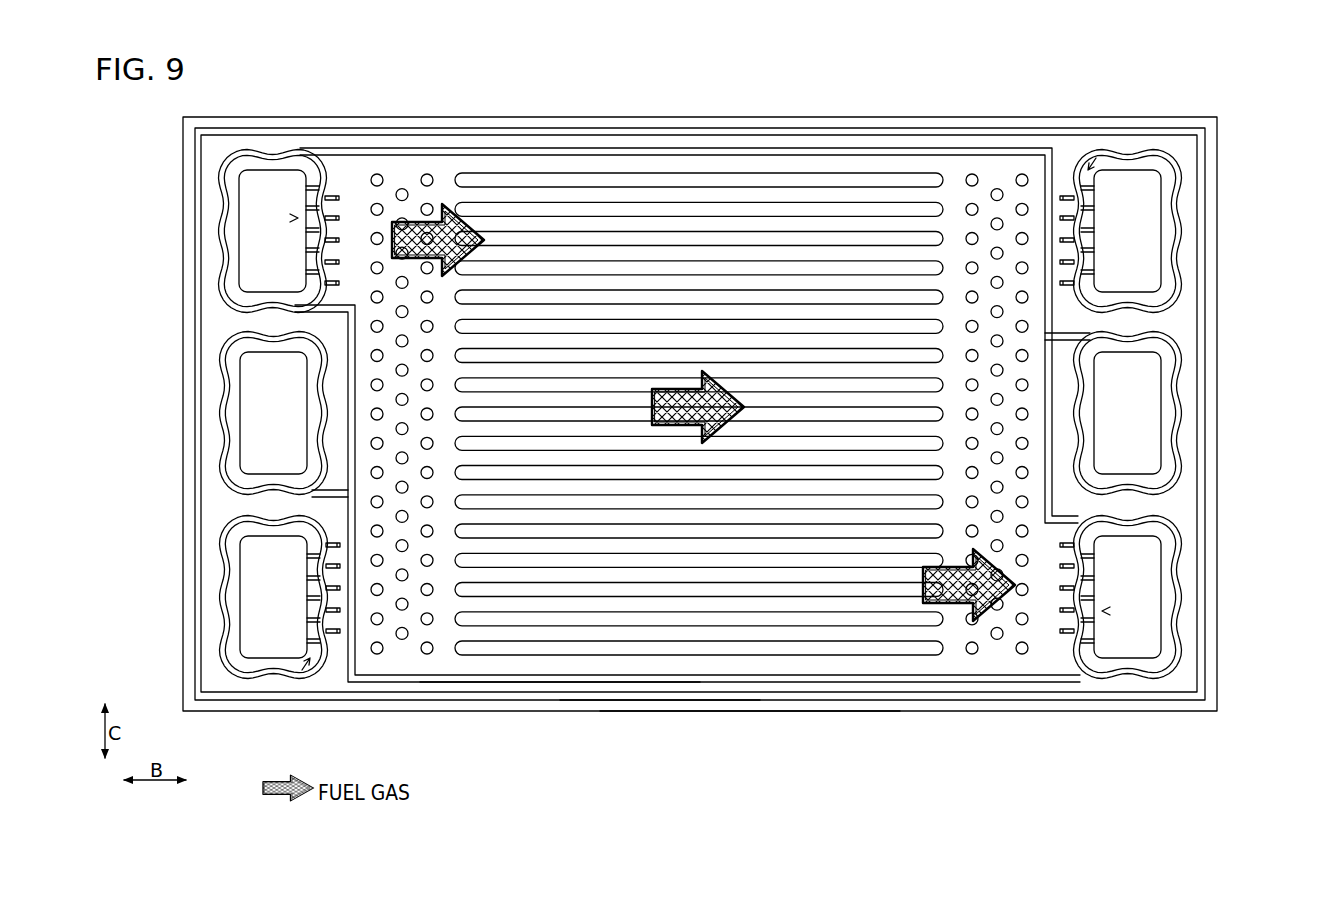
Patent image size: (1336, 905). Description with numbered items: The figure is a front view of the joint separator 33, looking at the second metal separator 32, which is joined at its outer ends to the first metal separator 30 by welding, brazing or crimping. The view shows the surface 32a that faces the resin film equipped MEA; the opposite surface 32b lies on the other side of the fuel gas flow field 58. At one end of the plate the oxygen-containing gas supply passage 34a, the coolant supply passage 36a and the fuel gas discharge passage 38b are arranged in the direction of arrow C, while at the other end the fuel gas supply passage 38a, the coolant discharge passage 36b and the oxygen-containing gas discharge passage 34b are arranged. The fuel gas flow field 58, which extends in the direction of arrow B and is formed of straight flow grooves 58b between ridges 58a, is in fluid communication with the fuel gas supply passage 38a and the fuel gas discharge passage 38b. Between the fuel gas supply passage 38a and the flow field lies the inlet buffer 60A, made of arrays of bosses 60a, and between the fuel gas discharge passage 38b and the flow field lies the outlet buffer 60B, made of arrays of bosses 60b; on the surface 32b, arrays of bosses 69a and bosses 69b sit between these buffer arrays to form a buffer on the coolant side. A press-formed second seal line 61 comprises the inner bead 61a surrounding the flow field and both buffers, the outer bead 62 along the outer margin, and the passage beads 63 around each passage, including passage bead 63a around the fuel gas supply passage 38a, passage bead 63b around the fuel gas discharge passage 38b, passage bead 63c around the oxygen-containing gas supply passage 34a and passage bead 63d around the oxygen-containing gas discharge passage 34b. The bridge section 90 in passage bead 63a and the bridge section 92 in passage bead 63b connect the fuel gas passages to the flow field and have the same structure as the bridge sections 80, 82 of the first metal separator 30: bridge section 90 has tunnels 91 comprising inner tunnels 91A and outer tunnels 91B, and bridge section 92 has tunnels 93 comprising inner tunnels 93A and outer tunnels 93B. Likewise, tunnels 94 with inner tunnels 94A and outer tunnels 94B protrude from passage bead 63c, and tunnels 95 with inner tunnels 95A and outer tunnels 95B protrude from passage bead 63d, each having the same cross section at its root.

The first metal separator 30 is at (812, 118).
The second metal separator 32 is at (700, 416).
The surface 32a is at (500, 694).
The surface 32b is at (540, 684).
The joint separator 33 is at (1226, 85).
The oxygen-containing gas supply passage 34a is at (1150, 253).
The oxygen-containing gas discharge passage 34b is at (260, 556).
The coolant supply passage 36a is at (1148, 390).
The coolant discharge passage 36b is at (255, 438).
The fuel gas supply passage 38a is at (258, 260).
The fuel gas discharge passage 38b is at (1142, 572).
The fuel gas flow field 58 is at (699, 351).
The ridges 58a is at (626, 214).
The straight flow grooves 58b is at (690, 187).
The inlet buffer 60A is at (413, 410).
The outlet buffer 60B is at (985, 407).
The bosses 60a is at (377, 174).
The bosses 60b is at (972, 174).
The second seal line 61 is at (720, 714).
The inner bead 61a is at (678, 684).
The outer bead 62 is at (622, 702).
The passage beads 63 is at (701, 414).
The passage bead 63a is at (222, 285).
The passage bead 63b is at (1183, 538).
The passage bead 63c is at (1183, 180).
The passage bead 63d is at (224, 632).
The bosses 69a is at (403, 640).
The bosses 69b is at (997, 640).
The bridge section 80 is at (1094, 160).
The bridge section 82 is at (304, 668).
The bridge section 90 is at (297, 218).
The tunnels 91 is at (212, 183).
The inner tunnels 91A is at (312, 203).
The outer tunnels 91B is at (337, 196).
The bridge section 92 is at (1103, 611).
The tunnels 93 is at (1188, 651).
The inner tunnels 93A is at (1088, 636).
The outer tunnels 93B is at (1066, 634).
The tunnels 94 is at (1185, 164).
The inner tunnels 94A is at (1088, 218).
The outer tunnels 94B is at (1062, 194).
The tunnels 95 is at (326, 652).
The inner tunnels 95A is at (316, 618).
The outer tunnels 95B is at (333, 636).